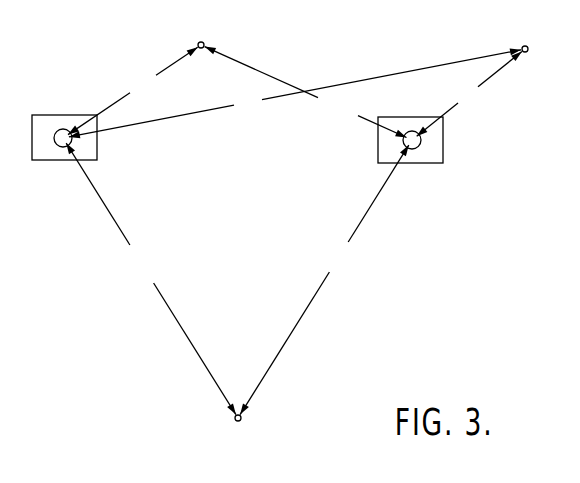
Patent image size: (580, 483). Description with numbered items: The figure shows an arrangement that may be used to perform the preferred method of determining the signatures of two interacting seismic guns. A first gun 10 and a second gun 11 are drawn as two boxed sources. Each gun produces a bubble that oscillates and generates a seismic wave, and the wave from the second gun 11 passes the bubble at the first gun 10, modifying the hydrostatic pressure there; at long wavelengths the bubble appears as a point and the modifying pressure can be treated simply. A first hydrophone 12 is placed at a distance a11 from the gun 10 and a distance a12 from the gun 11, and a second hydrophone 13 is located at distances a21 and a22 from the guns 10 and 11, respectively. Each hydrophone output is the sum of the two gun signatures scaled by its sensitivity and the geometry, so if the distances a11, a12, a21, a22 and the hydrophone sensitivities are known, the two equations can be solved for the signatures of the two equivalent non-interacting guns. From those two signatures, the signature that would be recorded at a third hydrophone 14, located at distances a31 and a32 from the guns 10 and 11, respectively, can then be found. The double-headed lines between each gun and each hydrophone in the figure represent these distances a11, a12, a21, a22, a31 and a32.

The first gun 10 is at (433, 163).
The second gun 11 is at (54, 161).
The first hydrophone 12 is at (528, 48).
The second hydrophone 13 is at (204, 42).
The third hydrophone 14 is at (220, 442).
The distance from first hydrophone to first gun a11 is at (469, 94).
The distance from first hydrophone to second gun a12 is at (295, 93).
The distance from second hydrophone to first gun a21 is at (306, 92).
The distance from second hydrophone to second gun a22 is at (133, 90).
The distance from third hydrophone to first gun a31 is at (324, 280).
The distance from third hydrophone to second gun a32 is at (151, 279).